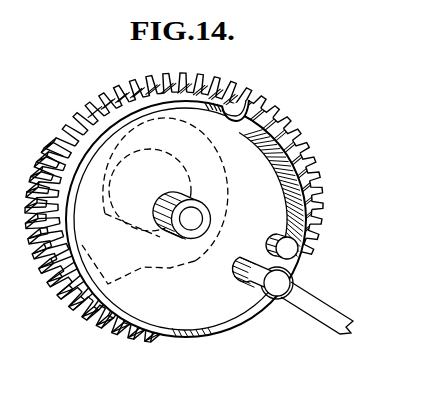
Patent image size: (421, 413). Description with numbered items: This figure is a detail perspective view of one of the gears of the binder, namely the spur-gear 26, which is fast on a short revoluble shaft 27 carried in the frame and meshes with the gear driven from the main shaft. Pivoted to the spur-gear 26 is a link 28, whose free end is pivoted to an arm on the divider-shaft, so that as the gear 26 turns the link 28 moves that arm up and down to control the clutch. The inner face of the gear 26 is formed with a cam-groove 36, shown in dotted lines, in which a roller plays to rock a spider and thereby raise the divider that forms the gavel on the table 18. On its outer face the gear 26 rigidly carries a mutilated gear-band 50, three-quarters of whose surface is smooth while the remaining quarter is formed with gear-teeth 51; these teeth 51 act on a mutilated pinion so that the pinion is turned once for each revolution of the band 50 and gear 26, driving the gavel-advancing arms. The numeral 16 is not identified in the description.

The roller 16 is at (223, 280).
The table 18 is at (147, 157).
The spur-gear 26 is at (74, 109).
The short revoluble shaft 27 is at (198, 218).
The link 28 is at (316, 303).
The cam-groove 36 is at (218, 184).
The mutilated gear-band 50 is at (196, 336).
The gear-teeth 51 is at (310, 181).